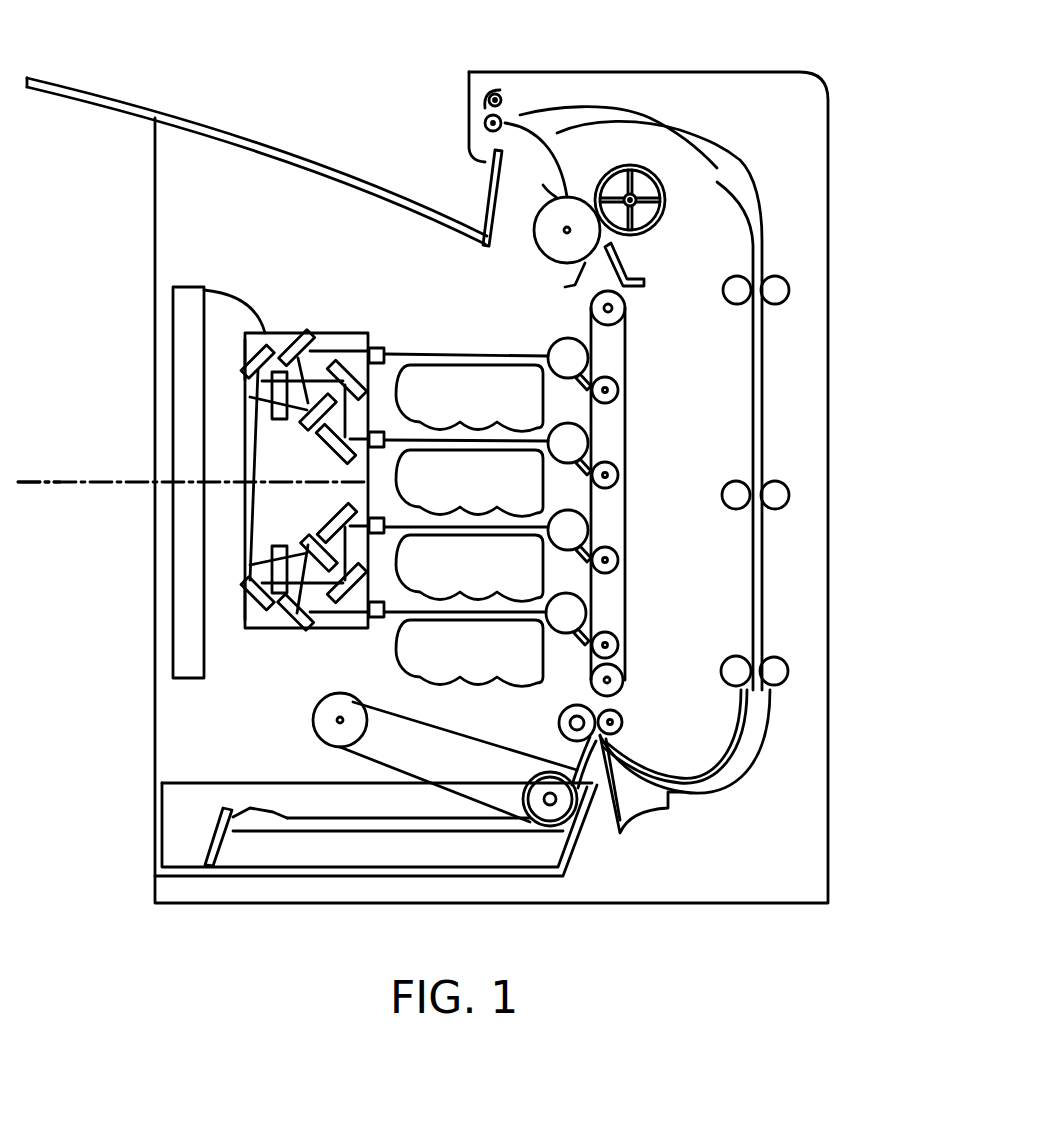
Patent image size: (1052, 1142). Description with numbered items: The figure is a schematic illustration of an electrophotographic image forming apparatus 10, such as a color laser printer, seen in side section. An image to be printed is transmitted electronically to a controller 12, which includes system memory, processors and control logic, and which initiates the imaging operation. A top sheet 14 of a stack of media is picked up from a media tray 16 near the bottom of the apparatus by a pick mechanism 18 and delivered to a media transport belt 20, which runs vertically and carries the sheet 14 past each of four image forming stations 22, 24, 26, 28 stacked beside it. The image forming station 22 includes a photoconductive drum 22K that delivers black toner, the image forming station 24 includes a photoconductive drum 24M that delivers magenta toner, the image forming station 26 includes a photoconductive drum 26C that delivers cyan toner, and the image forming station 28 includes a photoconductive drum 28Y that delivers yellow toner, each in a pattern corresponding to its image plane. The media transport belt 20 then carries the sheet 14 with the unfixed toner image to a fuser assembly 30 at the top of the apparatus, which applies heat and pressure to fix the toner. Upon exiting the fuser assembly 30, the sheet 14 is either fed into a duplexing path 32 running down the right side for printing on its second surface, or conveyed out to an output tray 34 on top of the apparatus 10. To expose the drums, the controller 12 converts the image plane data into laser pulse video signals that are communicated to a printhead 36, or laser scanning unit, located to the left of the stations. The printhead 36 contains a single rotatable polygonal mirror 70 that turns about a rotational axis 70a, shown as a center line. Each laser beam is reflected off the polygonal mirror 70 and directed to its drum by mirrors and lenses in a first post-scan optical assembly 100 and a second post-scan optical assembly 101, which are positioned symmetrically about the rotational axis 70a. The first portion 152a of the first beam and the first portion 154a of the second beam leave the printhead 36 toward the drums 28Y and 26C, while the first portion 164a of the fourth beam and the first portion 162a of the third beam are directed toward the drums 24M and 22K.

The electrophotographic image forming apparatus 10 is at (624, 62).
The controller 12 is at (173, 385).
The top sheet 14 is at (262, 806).
The media tray 16 is at (165, 822).
The pick mechanism 18 is at (338, 765).
The media transport belt 20 is at (640, 748).
The image forming station 22 is at (492, 665).
The image forming station 24 is at (492, 582).
The image forming station 26 is at (492, 495).
The image forming station 28 is at (492, 410).
The photoconductive drum 22K is at (593, 625).
The photoconductive drum 24M is at (593, 543).
The photoconductive drum 26C is at (593, 460).
The photoconductive drum 28Y is at (593, 371).
The fuser assembly 30 is at (647, 271).
The duplexing path 32 is at (779, 411).
The output tray 34 is at (355, 152).
The printhead 36 is at (319, 330).
The rotatable polygonal mirror 70 is at (247, 480).
The rotational axis 70a is at (60, 478).
The first post-scan optical assembly 100 is at (240, 357).
The second post-scan optical assembly 101 is at (240, 597).
The first portion of the first beam 152a is at (422, 353).
The first portion of the second beam 154a is at (400, 443).
The first portion of the fourth beam 164a is at (397, 525).
The first portion of the third beam 162a is at (398, 612).